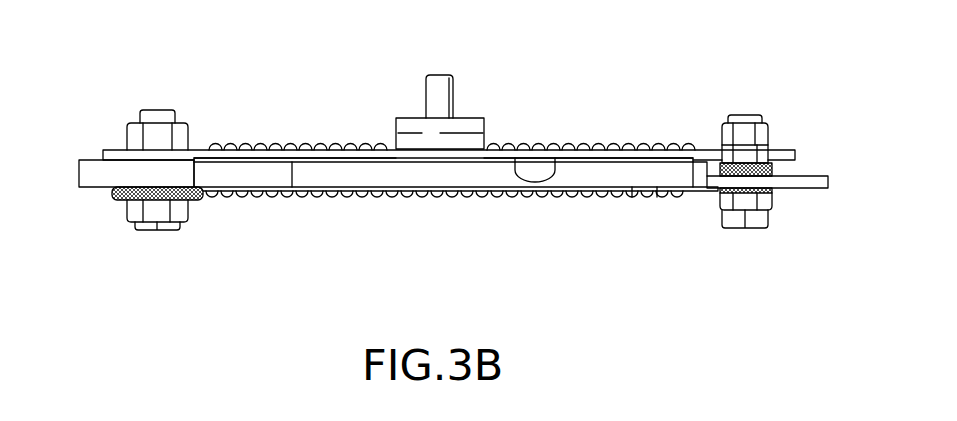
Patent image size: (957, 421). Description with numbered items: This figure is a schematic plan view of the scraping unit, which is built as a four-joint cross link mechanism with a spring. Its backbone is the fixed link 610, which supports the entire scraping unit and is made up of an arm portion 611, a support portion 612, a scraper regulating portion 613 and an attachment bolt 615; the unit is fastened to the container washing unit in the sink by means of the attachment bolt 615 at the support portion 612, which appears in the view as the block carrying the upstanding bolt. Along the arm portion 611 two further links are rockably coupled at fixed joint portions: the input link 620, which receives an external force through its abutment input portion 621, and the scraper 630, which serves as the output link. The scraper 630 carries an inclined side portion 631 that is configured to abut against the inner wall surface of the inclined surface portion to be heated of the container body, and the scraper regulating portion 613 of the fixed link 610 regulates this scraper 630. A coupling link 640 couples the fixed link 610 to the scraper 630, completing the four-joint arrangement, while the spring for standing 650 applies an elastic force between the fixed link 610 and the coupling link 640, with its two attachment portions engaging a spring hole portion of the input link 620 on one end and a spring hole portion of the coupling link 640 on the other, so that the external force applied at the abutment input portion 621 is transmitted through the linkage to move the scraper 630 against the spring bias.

The fixed link 610 is at (433, 74).
The arm portion 611 is at (297, 148).
The support portion 612 is at (478, 116).
The scraper regulating portion 613 is at (545, 176).
The attachment bolt 615 is at (443, 75).
The input link 620 is at (785, 167).
The abutment input portion 621 is at (793, 188).
The scraper 630 is at (125, 155).
The inclined side portion 631 is at (93, 175).
The coupling link 640 is at (430, 202).
The spring for standing 650 is at (318, 182).